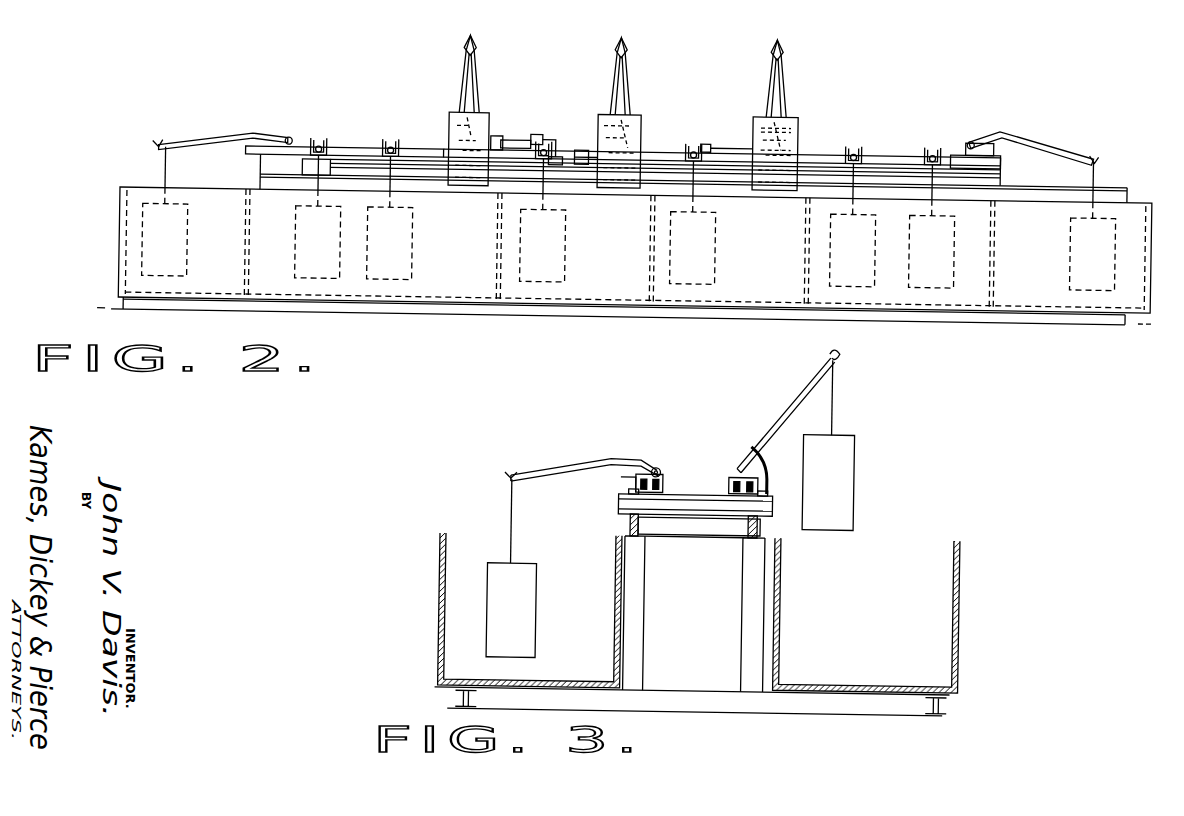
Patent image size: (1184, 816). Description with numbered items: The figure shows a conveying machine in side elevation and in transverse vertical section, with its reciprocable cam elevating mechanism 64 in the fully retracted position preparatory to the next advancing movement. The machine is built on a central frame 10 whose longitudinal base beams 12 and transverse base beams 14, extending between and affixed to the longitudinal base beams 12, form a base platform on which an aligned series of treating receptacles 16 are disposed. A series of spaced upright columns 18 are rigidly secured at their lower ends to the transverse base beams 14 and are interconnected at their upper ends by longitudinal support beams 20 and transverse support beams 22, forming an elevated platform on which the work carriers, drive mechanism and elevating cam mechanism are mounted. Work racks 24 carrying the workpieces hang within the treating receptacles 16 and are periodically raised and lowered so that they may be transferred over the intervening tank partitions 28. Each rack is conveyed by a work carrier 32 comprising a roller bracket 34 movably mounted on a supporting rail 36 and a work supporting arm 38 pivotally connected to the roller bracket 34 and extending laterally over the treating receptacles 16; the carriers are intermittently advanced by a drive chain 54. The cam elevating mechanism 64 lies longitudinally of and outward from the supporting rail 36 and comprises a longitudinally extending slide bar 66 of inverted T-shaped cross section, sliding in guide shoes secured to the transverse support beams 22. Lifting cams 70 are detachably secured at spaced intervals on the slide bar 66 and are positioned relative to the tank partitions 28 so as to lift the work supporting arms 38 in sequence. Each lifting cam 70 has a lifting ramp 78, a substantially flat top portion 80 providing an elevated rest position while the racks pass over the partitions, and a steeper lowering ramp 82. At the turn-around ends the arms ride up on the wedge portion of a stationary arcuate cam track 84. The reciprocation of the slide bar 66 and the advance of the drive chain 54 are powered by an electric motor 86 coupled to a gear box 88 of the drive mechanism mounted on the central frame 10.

In FIG. 2, the central frame 10 is at (250, 170).
In FIG. 3, the central frame 10 is at (738, 672).
In FIG. 2, the longitudinal base beam 12 is at (990, 298).
In FIG. 3, the longitudinal base beam 12 is at (456, 697).
In FIG. 3, the transverse base beam 14 is at (798, 703).
In FIG. 2, the treating receptacle 16 is at (1118, 186).
In FIG. 3, the treating receptacle 16 is at (457, 580).
In FIG. 3, the upright column 18 is at (747, 593).
In FIG. 2, the longitudinal support beam 20 is at (433, 183).
In FIG. 3, the longitudinal support beam 20 is at (628, 519).
In FIG. 3, the transverse support beam 22 is at (678, 502).
In FIG. 2, the work rack 24 is at (547, 258).
In FIG. 3, the work rack 24 is at (530, 614).
In FIG. 2, the tank partition 28 is at (498, 252).
In FIG. 2, the work carrier 32 is at (208, 140).
In FIG. 3, the work carrier 32 is at (745, 440).
In FIG. 3, the roller bracket 34 is at (664, 472).
In FIG. 3, the supporting rail 36 is at (651, 464).
In FIG. 2, the work supporting arm 38 is at (1016, 124).
In FIG. 3, the work supporting arm 38 is at (558, 468).
In FIG. 3, the drive chain 54 is at (664, 489).
In FIG. 2, the reciprocable cam elevating mechanism 64 is at (652, 137).
In FIG. 3, the reciprocable cam elevating mechanism 64 is at (772, 452).
In FIG. 2, the slide bar 66 is at (722, 152).
In FIG. 3, the slide bar 66 is at (627, 484).
In FIG. 2, the lifting cam 70 is at (447, 137).
In FIG. 3, the lifting cam 70 is at (633, 468).
In FIG. 2, the lifting ramp 78 is at (738, 138).
In FIG. 2, the flat top portion 80 is at (796, 113).
In FIG. 2, the lowering ramp 82 is at (798, 135).
In FIG. 2, the arcuate cam track 84 is at (1000, 150).
In FIG. 2, the electric motor 86 is at (493, 115).
In FIG. 2, the gear box 88 is at (502, 137).